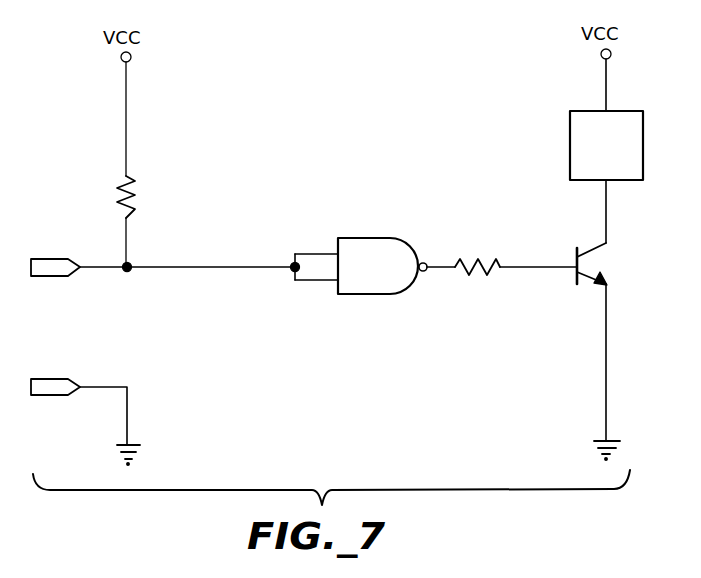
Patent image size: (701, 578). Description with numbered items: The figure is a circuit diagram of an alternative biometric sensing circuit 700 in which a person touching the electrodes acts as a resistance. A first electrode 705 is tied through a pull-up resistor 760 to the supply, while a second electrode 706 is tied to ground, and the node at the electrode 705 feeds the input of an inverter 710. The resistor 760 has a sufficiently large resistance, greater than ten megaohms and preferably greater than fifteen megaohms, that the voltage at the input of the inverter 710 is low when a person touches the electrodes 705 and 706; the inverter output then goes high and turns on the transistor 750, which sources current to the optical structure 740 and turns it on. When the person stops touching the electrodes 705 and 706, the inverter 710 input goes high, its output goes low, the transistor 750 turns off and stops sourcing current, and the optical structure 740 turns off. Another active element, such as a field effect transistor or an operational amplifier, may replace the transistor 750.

The biometric sensing circuit 700 is at (298, 126).
The electrode 705 is at (50, 278).
The electrode 706 is at (48, 377).
The inverter 710 is at (388, 296).
The optical structure 740 is at (568, 135).
The transistor 750 is at (576, 258).
The resistor 760 is at (138, 195).